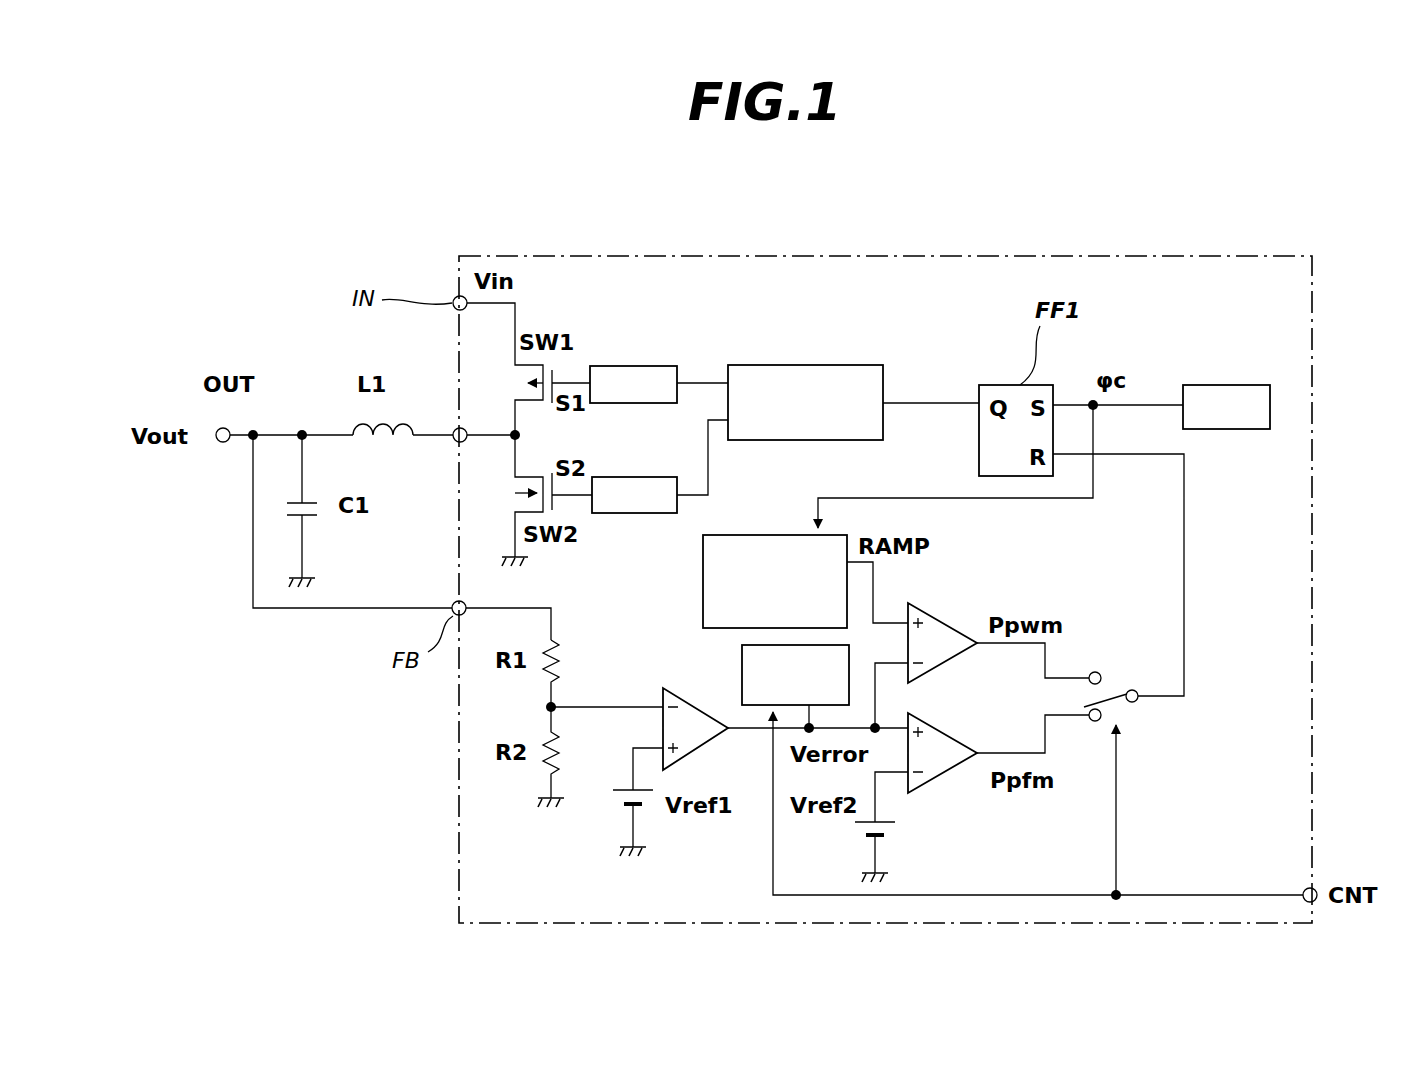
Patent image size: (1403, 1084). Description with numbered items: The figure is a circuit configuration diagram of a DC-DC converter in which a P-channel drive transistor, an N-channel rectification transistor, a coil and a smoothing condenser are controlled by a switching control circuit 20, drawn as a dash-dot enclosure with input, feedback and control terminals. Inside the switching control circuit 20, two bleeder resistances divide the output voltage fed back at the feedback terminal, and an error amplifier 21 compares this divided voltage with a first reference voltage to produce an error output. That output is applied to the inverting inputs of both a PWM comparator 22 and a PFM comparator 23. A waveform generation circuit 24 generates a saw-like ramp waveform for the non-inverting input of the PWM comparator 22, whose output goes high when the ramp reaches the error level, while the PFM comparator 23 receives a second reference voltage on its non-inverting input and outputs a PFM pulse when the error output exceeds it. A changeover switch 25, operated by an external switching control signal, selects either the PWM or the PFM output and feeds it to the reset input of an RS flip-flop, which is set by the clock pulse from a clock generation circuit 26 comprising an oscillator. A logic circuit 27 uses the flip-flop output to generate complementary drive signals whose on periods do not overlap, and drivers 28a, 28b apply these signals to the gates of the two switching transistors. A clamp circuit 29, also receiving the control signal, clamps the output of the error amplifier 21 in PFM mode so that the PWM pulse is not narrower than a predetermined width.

The switching control circuit 20 is at (1108, 256).
The error amplifier 21 is at (667, 690).
The PWM comparator 22 is at (945, 622).
The PFM comparator 23 is at (940, 778).
The waveform generation circuit 24 is at (790, 535).
The changeover switch 25 is at (1118, 672).
The clock generation circuit 26 is at (1220, 385).
The logic circuit 27 is at (800, 365).
The driver 28a is at (640, 366).
The driver 28b is at (640, 513).
The clamp circuit 29 is at (742, 690).